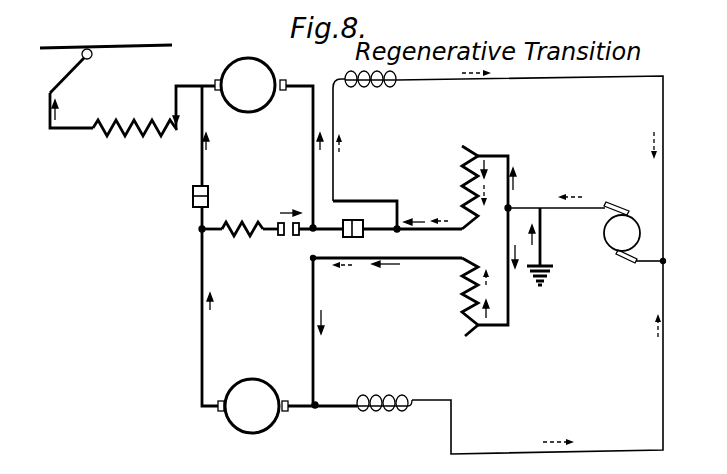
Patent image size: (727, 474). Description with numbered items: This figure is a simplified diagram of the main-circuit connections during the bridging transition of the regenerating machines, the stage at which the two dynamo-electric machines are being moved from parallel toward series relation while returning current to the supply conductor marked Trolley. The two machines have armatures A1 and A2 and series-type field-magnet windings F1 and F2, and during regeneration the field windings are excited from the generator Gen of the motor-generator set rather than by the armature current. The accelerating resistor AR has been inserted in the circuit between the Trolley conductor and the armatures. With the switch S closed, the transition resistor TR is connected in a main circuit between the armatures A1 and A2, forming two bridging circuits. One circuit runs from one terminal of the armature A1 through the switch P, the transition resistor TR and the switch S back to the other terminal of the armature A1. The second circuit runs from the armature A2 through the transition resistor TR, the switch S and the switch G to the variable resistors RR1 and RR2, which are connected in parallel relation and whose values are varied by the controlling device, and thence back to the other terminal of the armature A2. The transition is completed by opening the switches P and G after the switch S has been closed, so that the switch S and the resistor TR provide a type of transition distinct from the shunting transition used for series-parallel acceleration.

The supply-circuit conductor Trolley is at (106, 69).
The accelerating resistor AR is at (135, 117).
The armature A1 is at (250, 85).
The armature A2 is at (253, 406).
The motor-controlling switch P is at (211, 195).
The transition resistor TR is at (242, 241).
The motor-controlling switch S is at (288, 242).
The motor-controlling switch G is at (456, 255).
The field-magnet winding F1 is at (371, 91).
The field-magnet winding F2 is at (384, 414).
The variable resistor RR1 is at (445, 187).
The variable resistor RR2 is at (444, 297).
The generator Gen is at (606, 232).